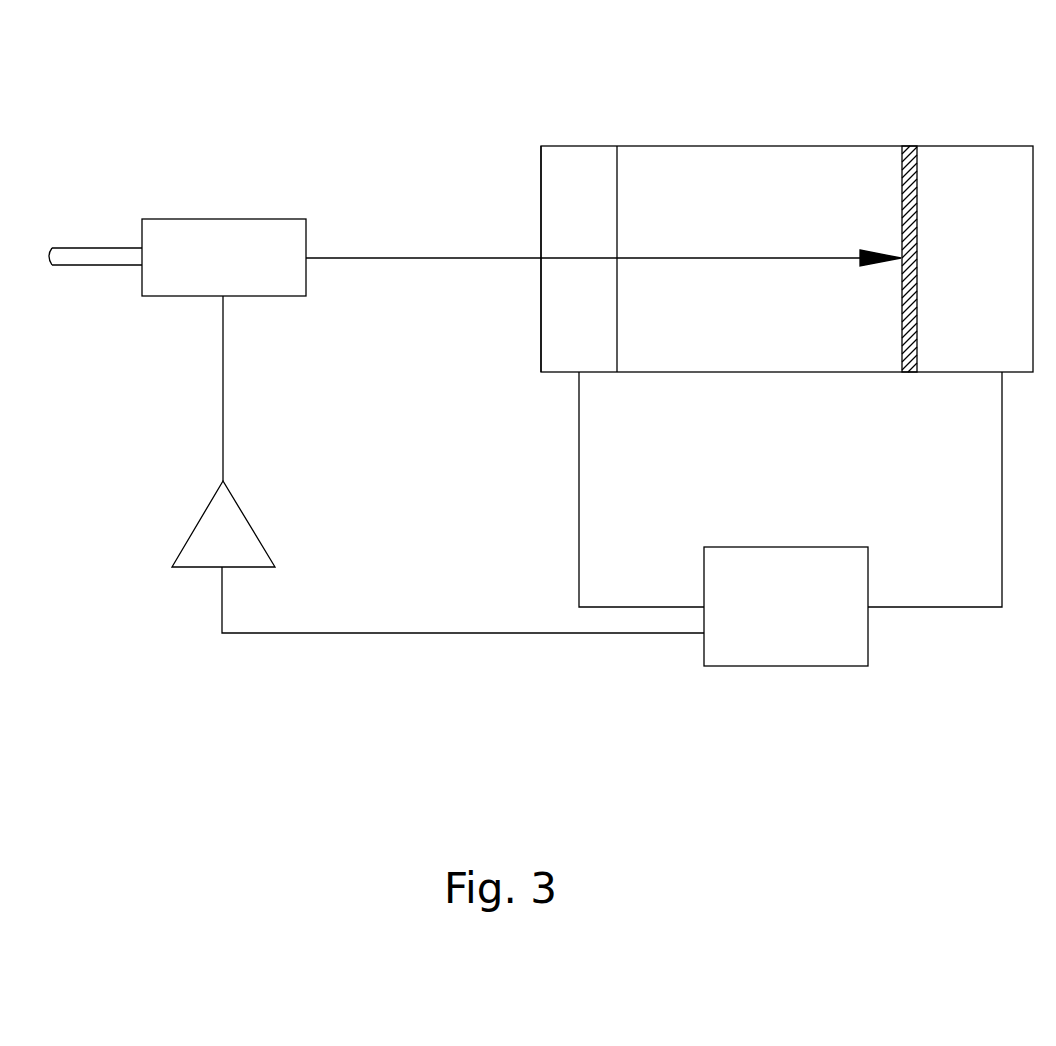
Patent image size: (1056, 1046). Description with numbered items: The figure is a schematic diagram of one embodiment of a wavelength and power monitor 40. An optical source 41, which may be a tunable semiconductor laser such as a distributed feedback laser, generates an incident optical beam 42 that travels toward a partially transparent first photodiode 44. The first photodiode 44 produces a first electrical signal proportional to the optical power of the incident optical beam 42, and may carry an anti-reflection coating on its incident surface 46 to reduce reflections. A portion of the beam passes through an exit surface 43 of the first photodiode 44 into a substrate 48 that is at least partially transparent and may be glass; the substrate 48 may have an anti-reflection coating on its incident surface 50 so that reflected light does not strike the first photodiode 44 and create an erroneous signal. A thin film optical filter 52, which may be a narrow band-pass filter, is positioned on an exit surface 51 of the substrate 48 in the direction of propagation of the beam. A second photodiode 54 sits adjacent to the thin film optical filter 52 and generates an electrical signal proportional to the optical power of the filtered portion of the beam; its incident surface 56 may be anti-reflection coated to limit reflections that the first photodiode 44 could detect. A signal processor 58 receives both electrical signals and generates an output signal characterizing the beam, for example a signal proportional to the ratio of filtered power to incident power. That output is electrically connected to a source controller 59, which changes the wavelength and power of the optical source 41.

The wavelength and power monitor 40 is at (787, 217).
The optical source 41 is at (177, 234).
The incident optical beam 42 is at (603, 237).
The exit surface 43 is at (590, 316).
The first photodiode 44 is at (588, 242).
The incident surface 46 is at (513, 259).
The substrate 48 is at (673, 191).
The incident surface 50 is at (647, 371).
The exit surface 51 is at (872, 318).
The thin film optical filter 52 is at (886, 259).
The second photodiode 54 is at (975, 180).
The incident surface 56 is at (954, 351).
The signal processor 58 is at (790, 519).
The source controller 59 is at (438, 464).